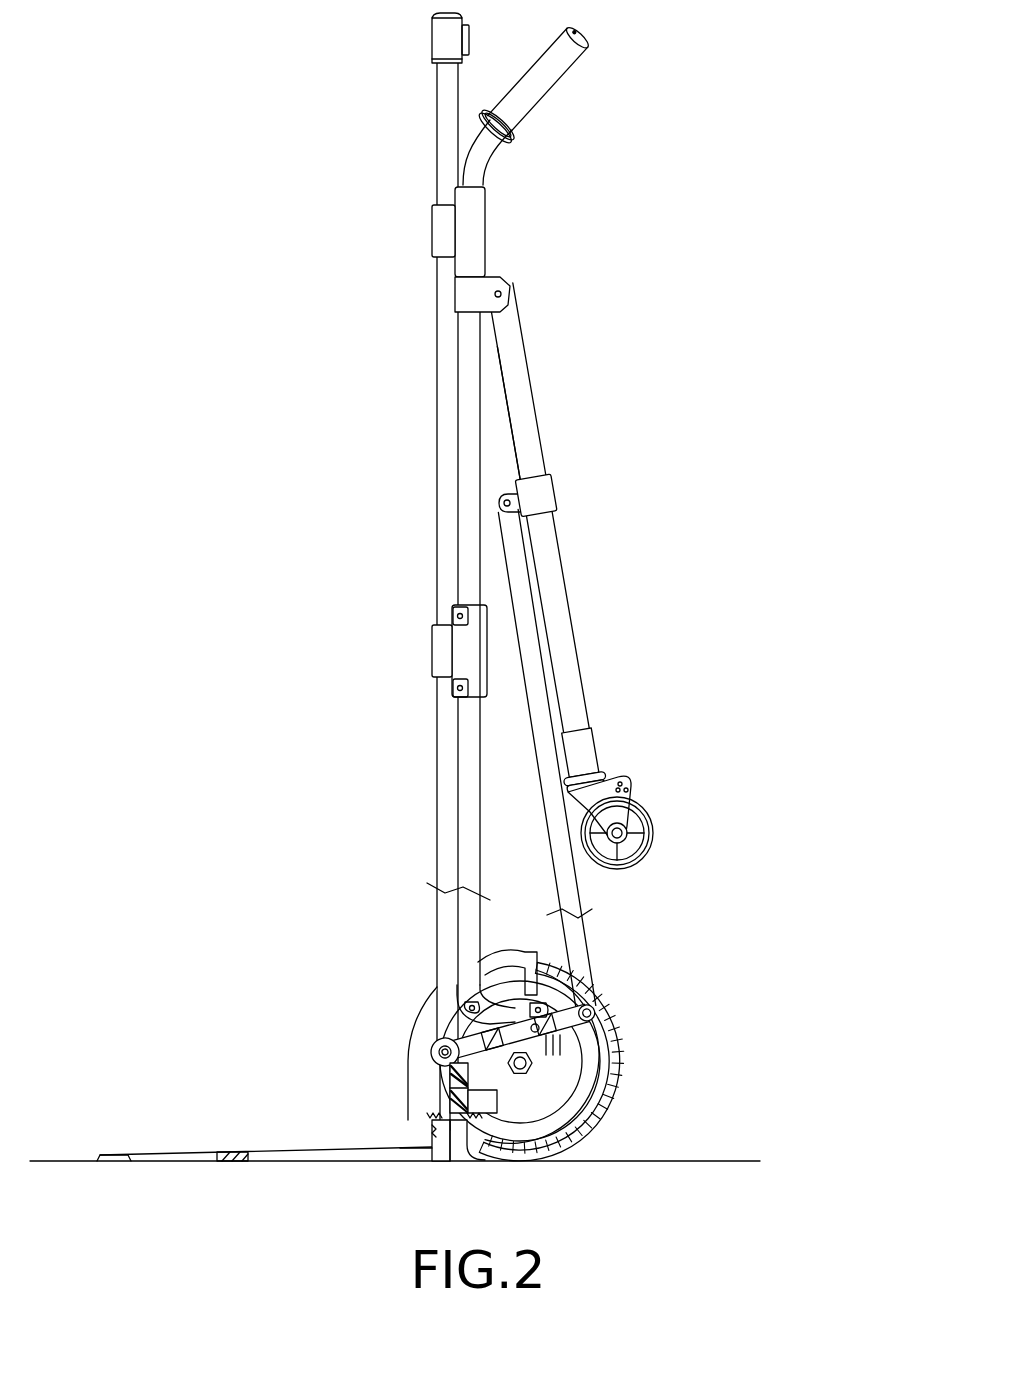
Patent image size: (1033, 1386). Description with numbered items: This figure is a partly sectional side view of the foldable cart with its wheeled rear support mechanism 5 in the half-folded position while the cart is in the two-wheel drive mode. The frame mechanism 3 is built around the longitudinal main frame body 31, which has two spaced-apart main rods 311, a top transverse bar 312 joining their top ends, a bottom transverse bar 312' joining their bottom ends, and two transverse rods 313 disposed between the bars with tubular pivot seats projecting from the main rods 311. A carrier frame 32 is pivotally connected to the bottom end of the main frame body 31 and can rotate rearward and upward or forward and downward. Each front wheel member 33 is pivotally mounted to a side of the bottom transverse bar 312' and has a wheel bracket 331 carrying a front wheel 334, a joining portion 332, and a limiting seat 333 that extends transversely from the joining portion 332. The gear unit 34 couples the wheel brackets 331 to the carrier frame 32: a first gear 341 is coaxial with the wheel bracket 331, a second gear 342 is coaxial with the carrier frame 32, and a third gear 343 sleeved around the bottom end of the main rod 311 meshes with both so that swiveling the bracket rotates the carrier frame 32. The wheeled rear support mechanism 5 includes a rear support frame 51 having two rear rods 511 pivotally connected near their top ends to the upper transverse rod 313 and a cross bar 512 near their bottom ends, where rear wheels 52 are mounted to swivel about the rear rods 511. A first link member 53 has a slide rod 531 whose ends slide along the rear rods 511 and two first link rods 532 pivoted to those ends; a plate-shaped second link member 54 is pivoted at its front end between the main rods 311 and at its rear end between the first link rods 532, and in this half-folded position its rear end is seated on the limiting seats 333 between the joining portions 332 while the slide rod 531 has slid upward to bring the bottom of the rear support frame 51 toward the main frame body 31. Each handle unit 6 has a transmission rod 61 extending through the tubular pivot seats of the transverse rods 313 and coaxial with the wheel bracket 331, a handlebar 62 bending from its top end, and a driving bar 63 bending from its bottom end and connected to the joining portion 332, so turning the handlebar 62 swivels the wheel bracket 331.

The frame mechanism 3 is at (422, 618).
The main frame body 31 is at (406, 568).
The main rod 311 is at (445, 377).
The top transverse bar 312 is at (411, 35).
The bottom transverse bar 312' is at (387, 1062).
The transverse rod 313 is at (440, 228).
The carrier frame 32 is at (113, 1155).
The front wheel member 33 is at (541, 1046).
The wheel bracket 331 is at (427, 1003).
The joining portion 332 is at (543, 1008).
The limiting seat 333 is at (597, 1062).
The front wheel 334 is at (612, 1088).
The gear unit 34 is at (428, 1134).
The first gear 341 is at (482, 1120).
The second gear 342 is at (436, 1133).
The third gear 343 is at (440, 1107).
The wheeled rear support mechanism 5 is at (619, 637).
The rear support frame 51 is at (597, 538).
The rear rod 511 is at (527, 438).
The cross bar 512 is at (573, 748).
The rear wheel 52 is at (652, 817).
The first link member 53 is at (577, 751).
The slide rod 531 is at (540, 488).
The first link rod 532 is at (527, 637).
The second link member 54 is at (537, 1030).
The handle unit 6 is at (497, 512).
The transmission rod 61 is at (472, 482).
The handlebar 62 is at (532, 85).
The driving bar 63 is at (518, 1007).